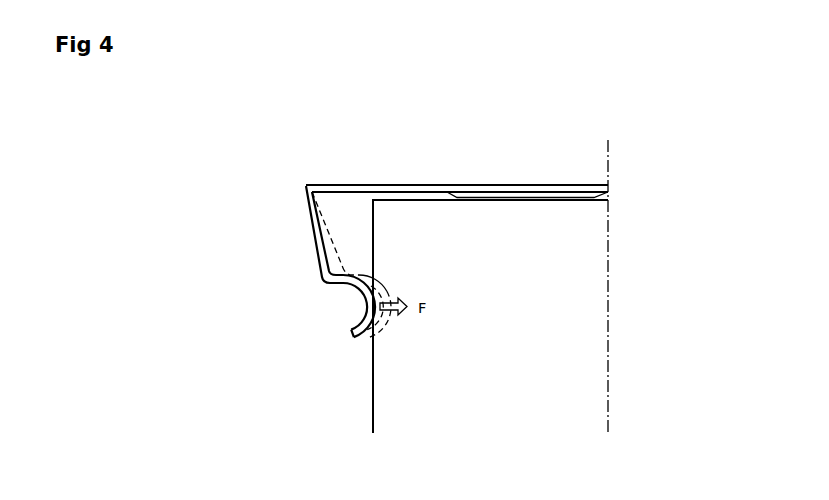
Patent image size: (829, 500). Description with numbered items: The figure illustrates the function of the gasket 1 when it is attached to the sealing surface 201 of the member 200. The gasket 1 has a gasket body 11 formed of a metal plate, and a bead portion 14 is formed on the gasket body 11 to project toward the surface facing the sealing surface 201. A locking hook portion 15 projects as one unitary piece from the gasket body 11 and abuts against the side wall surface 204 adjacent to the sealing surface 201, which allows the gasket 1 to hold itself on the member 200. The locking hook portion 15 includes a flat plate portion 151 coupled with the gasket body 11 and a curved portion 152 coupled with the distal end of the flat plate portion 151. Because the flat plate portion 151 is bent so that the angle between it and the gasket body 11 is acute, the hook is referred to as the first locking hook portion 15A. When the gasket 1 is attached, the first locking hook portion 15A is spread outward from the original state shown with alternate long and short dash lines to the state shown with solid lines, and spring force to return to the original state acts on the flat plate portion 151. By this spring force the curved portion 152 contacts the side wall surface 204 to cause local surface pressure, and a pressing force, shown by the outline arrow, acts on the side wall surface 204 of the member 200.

The gasket 1 is at (540, 158).
The gasket body 11 is at (387, 185).
The bead portion 14 is at (477, 185).
The locking hook portion 15 is at (260, 300).
The first locking hook portion 15A is at (299, 265).
The flat plate portion 151 is at (332, 271).
The curved portion 152 is at (366, 300).
The member 200 is at (597, 347).
The sealing surface 201 is at (610, 193).
The side wall surface 204 is at (373, 412).